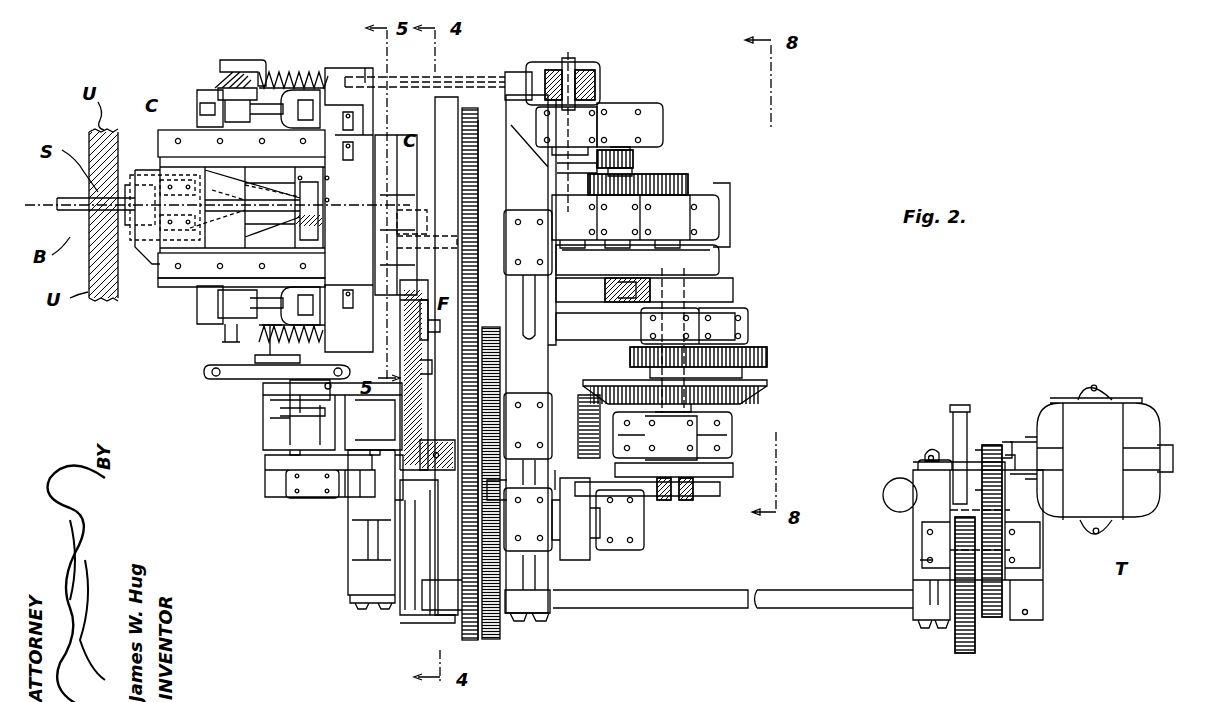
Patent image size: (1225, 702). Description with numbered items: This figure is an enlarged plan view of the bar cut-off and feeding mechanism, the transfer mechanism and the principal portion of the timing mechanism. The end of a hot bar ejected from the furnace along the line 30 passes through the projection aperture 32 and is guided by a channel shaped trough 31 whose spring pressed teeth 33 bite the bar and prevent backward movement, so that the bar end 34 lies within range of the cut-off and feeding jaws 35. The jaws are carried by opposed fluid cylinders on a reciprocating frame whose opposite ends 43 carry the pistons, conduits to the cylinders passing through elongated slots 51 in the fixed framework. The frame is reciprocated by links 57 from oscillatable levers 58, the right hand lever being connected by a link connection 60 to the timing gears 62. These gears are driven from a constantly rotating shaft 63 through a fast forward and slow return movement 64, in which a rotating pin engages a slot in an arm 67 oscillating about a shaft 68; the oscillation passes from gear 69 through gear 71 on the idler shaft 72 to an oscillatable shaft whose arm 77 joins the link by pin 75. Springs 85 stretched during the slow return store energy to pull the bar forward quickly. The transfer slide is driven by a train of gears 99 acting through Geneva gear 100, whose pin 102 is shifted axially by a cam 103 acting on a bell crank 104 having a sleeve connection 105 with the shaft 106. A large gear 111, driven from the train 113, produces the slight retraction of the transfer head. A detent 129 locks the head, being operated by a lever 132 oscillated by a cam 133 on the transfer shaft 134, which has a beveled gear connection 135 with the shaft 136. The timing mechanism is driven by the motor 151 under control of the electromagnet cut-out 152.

The bar axis line 30 is at (478, 176).
The channel shaped trough 31 is at (283, 210).
The projection aperture 32 is at (103, 191).
The spring pressed teeth 33 is at (162, 270).
The bar end 34 is at (298, 207).
The cut-off and feeding jaws 35 is at (388, 221).
The frame ends 43 is at (354, 214).
The elongated slots 51 is at (354, 128).
The links 57 is at (303, 106).
The oscillatable levers 58 is at (225, 90).
The link connection 60 is at (466, 81).
The timing gears 62 is at (639, 175).
The constantly rotating shaft 63 is at (748, 324).
The fast forward and slow return movement 64 is at (722, 291).
The arm 67 is at (700, 263).
The shaft 68 is at (585, 121).
The gear 69 is at (628, 177).
The gear 71 is at (629, 152).
The idler shaft 72 is at (628, 119).
The pin 75 is at (570, 61).
The arm 77 is at (556, 71).
The springs 85 is at (312, 83).
The train of gears 99 is at (672, 567).
The Geneva gear 100 is at (445, 597).
The pin 102 is at (433, 460).
The cam 103 is at (722, 481).
The bell crank 104 is at (646, 491).
The fixed sleeve connection 105 is at (573, 561).
The shaft 106 is at (600, 561).
The large gear 111 is at (438, 271).
The train 113 is at (502, 375).
The detent 129 is at (400, 478).
The lever 132 is at (293, 427).
The cam 133 is at (278, 395).
The transfer shaft 134 is at (209, 376).
The beveled gear connection 135 is at (386, 185).
The shaft 136 is at (427, 242).
The driving motor 151 is at (1106, 432).
The electromagnet cut-out 152 is at (970, 411).